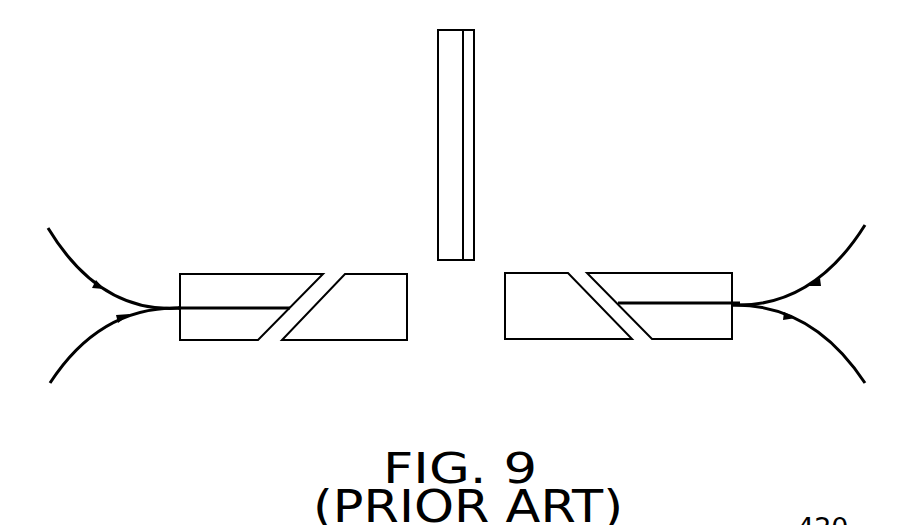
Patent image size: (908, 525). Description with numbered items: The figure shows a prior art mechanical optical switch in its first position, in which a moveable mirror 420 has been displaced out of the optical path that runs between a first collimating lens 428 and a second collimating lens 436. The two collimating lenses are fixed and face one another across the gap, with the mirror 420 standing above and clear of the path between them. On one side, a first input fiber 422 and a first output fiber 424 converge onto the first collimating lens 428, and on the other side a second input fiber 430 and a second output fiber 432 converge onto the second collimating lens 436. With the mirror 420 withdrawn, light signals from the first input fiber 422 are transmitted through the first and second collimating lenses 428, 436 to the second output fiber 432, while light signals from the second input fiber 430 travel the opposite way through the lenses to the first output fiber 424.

The mirror 420 is at (438, 132).
The first input fiber 422 is at (70, 263).
The first output fiber 424 is at (72, 352).
The first collimating lens 428 is at (365, 340).
The second input fiber 430 is at (847, 252).
The second output fiber 432 is at (827, 337).
The second collimating lens 436 is at (575, 339).